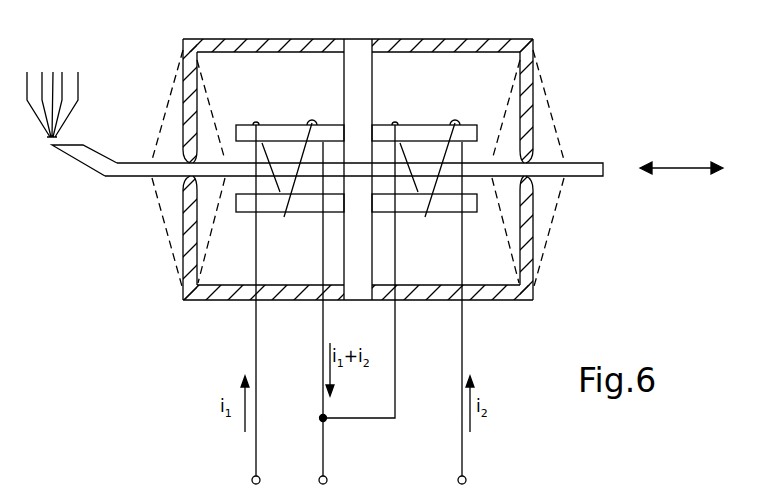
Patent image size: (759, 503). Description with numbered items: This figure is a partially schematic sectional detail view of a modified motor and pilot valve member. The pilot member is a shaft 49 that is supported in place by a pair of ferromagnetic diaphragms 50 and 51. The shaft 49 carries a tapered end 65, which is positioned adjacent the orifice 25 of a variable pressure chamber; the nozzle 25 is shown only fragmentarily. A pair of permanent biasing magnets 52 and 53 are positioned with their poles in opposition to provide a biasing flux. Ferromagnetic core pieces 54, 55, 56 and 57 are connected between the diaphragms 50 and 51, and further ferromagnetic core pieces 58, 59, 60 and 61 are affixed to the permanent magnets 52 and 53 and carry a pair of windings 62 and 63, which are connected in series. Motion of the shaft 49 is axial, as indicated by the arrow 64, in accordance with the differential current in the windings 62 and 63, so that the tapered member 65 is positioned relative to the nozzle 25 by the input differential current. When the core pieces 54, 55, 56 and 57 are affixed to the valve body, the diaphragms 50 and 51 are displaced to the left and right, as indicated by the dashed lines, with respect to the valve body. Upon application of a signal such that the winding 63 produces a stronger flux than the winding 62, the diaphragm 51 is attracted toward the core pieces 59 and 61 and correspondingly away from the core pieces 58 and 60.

The orifice 25 is at (56, 136).
The shaft 49 is at (603, 164).
The ferromagnetic diaphragm 50 is at (188, 75).
The ferromagnetic diaphragm 51 is at (524, 73).
The biasing magnet 52 is at (362, 80).
The biasing magnet 53 is at (355, 255).
The ferromagnetic core piece 54 is at (278, 44).
The ferromagnetic core piece 55 is at (393, 44).
The ferromagnetic core piece 56 is at (281, 293).
The ferromagnetic core piece 57 is at (489, 293).
The ferromagnetic core piece 58 is at (266, 131).
The ferromagnetic core piece 59 is at (427, 132).
The ferromagnetic core piece 60 is at (297, 204).
The ferromagnetic core piece 61 is at (440, 205).
The winding 62 is at (313, 120).
The winding 63 is at (457, 119).
The axial motion 64 is at (681, 165).
The tapered end 65 is at (93, 160).